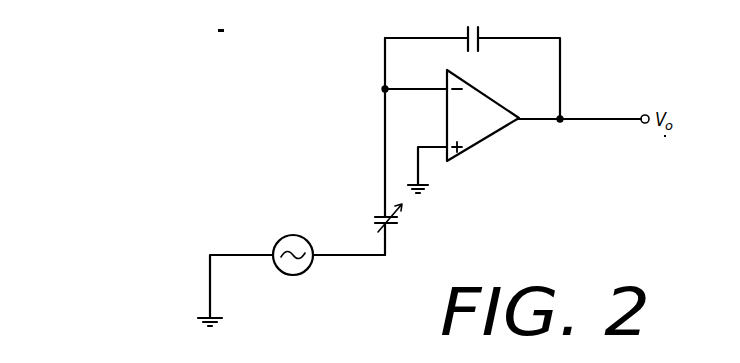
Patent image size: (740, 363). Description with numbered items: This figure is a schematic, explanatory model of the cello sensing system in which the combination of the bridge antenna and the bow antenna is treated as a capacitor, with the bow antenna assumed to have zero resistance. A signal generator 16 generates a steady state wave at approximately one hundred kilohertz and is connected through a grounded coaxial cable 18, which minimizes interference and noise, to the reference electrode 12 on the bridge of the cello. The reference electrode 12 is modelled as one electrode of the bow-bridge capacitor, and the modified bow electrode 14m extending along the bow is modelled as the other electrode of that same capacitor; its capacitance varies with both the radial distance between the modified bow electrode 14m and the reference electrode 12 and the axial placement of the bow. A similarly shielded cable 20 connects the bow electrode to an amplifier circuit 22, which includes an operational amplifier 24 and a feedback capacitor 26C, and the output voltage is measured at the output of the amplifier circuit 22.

The reference electrode 12 is at (393, 228).
The modified bow electrode 14m is at (383, 216).
The signal generator 16 is at (277, 241).
The grounded coaxial cable 18 is at (366, 260).
The shielded cable 20 is at (385, 120).
The amplifier circuit 22 is at (568, 38).
The amplifier 24 is at (492, 131).
The capacitor 26C is at (479, 37).